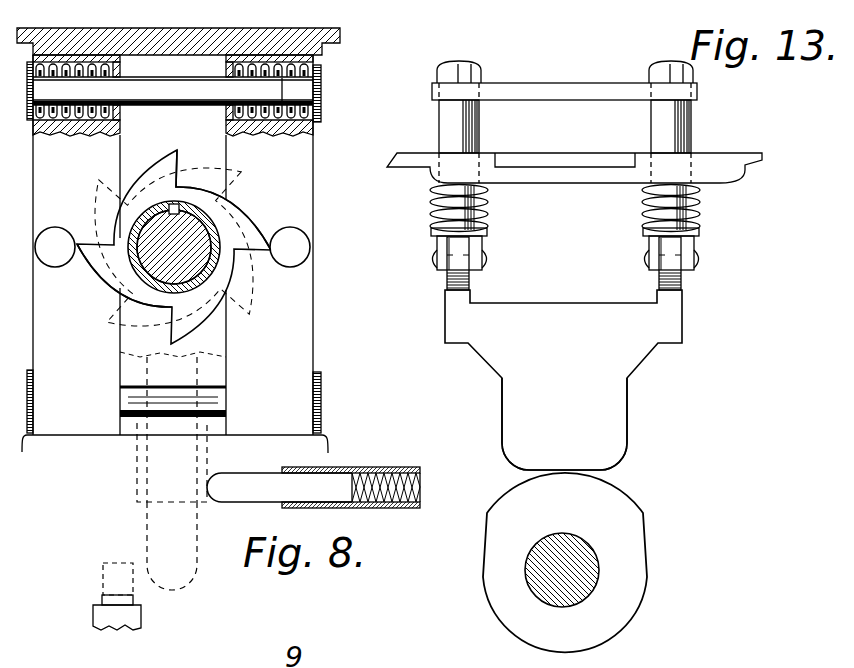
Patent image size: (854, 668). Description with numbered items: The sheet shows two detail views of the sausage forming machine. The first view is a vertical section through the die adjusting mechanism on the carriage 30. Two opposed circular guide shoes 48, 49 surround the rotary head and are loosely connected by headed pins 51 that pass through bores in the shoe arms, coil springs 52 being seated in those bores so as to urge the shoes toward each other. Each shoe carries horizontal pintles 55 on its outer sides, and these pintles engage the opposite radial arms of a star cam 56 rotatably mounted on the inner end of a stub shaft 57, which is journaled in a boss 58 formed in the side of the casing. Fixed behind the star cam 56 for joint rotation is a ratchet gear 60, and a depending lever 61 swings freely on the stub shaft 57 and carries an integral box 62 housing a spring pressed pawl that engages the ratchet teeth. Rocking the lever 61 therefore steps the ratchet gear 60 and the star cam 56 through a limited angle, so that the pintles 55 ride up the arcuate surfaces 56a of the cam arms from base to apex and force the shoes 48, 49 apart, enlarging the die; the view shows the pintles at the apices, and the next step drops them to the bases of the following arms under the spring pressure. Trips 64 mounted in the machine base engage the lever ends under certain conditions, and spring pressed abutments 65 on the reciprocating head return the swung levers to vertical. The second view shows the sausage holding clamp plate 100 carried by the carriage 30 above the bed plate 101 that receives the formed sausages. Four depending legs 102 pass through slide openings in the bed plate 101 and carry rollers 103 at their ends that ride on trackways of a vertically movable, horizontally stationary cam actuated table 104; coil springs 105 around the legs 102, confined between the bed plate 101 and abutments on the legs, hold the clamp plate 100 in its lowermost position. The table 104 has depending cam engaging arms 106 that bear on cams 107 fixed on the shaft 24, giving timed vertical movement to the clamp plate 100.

In FIG. 8, the boss 58 is at (343, 42).
In FIG. 8, the headed pin 51 is at (314, 87).
In FIG. 8, the coil spring 52 is at (313, 103).
In FIG. 8, the circular guide shoe 48 is at (303, 368).
In FIG. 8, the star cam 56 is at (203, 293).
In FIG. 8, the arcuate surface 56a is at (222, 210).
In FIG. 8, the stub shaft 57 is at (205, 245).
In FIG. 8, the horizontal pintle 55 is at (302, 245).
In FIG. 8, the ratchet gear 60 is at (209, 356).
In FIG. 8, the spring pressed abutment 65 is at (119, 367).
In FIG. 8, the circular guide shoe 49 is at (73, 426).
In FIG. 8, the box 62 is at (158, 464).
In FIG. 8, the depending lever 61 is at (147, 522).
In FIG. 8, the trip 64 is at (101, 597).
In FIG. 13, the clamping plate 100 is at (532, 86).
In FIG. 13, the bed plate 101 is at (543, 158).
In FIG. 13, the depending leg 102 is at (692, 130).
In FIG. 13, the carriage 30 is at (740, 167).
In FIG. 13, the coil spring 105 is at (643, 209).
In FIG. 13, the roller 103 is at (660, 288).
In FIG. 13, the cam actuated table 104 is at (680, 317).
In FIG. 13, the cam engaging arm 106 is at (618, 422).
In FIG. 13, the cam 107 is at (633, 533).
In FIG. 13, the shaft 24 is at (598, 573).